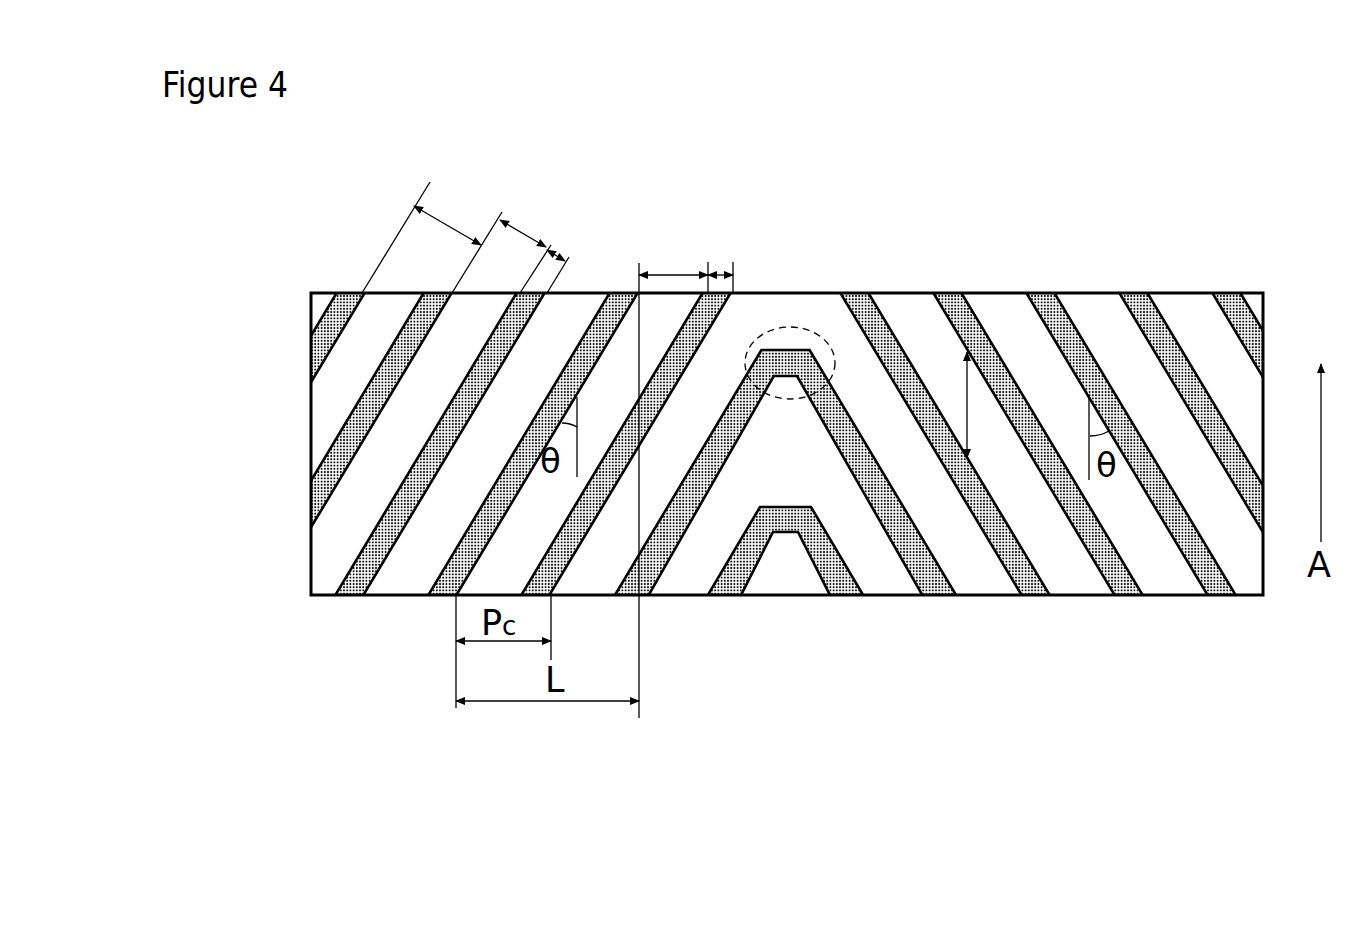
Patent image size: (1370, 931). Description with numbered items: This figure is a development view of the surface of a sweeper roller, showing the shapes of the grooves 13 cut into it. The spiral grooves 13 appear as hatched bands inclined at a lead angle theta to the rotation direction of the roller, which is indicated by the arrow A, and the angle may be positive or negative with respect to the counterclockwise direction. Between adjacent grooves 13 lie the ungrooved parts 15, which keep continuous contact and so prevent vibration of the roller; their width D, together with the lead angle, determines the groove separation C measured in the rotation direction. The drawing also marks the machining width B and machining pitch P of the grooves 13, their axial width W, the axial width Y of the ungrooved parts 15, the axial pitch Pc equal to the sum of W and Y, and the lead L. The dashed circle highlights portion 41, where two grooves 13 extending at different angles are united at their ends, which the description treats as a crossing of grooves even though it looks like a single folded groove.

The groove 13 is at (311, 495).
The ungrooved part 15 is at (311, 402).
The crossing of grooves 41 is at (790, 328).